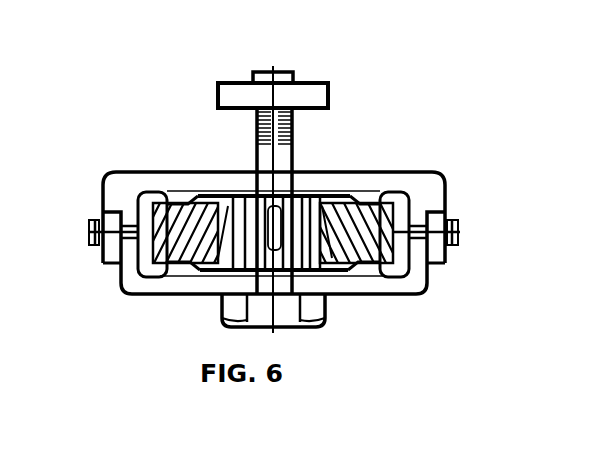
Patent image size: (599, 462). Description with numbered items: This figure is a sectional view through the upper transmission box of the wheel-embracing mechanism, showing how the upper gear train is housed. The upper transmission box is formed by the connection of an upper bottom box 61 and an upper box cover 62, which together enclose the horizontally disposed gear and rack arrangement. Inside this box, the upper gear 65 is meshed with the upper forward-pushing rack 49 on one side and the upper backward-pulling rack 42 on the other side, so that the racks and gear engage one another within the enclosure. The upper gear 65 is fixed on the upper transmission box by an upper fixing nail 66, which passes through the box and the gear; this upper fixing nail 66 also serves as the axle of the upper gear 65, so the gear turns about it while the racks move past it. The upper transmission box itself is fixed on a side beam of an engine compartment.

The upper bottom box 61 is at (131, 275).
The upper box cover 62 is at (152, 187).
The upper forward-pushing rack 49 is at (196, 197).
The upper backward-pulling rack 42 is at (378, 192).
The upper gear 65 is at (318, 190).
The upper fixing nail 66 is at (263, 104).